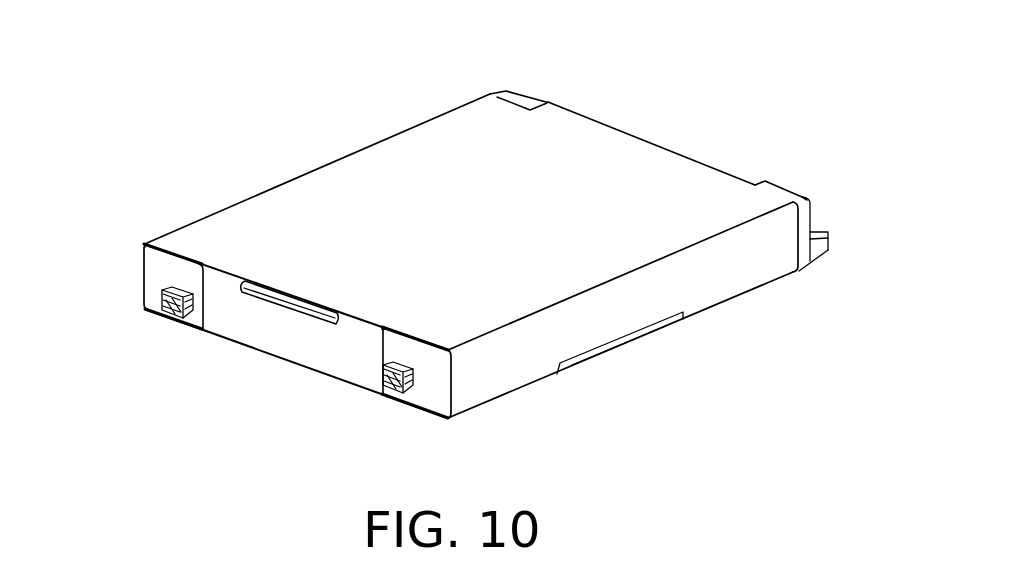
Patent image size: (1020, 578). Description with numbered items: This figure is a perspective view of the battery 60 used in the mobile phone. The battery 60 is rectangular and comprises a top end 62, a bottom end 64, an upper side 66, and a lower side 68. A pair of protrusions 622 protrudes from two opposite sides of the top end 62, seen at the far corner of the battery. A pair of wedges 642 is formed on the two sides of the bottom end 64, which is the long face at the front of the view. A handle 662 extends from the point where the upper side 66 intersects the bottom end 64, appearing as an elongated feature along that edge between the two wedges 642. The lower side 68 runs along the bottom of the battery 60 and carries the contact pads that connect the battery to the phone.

The battery 60 is at (447, 103).
The top end 62 is at (685, 148).
The protrusion 622 is at (828, 251).
The bottom end 64 is at (298, 333).
The wedge 642 is at (161, 316).
The upper side 66 is at (380, 173).
The handle 662 is at (264, 291).
The lower side 68 is at (542, 380).